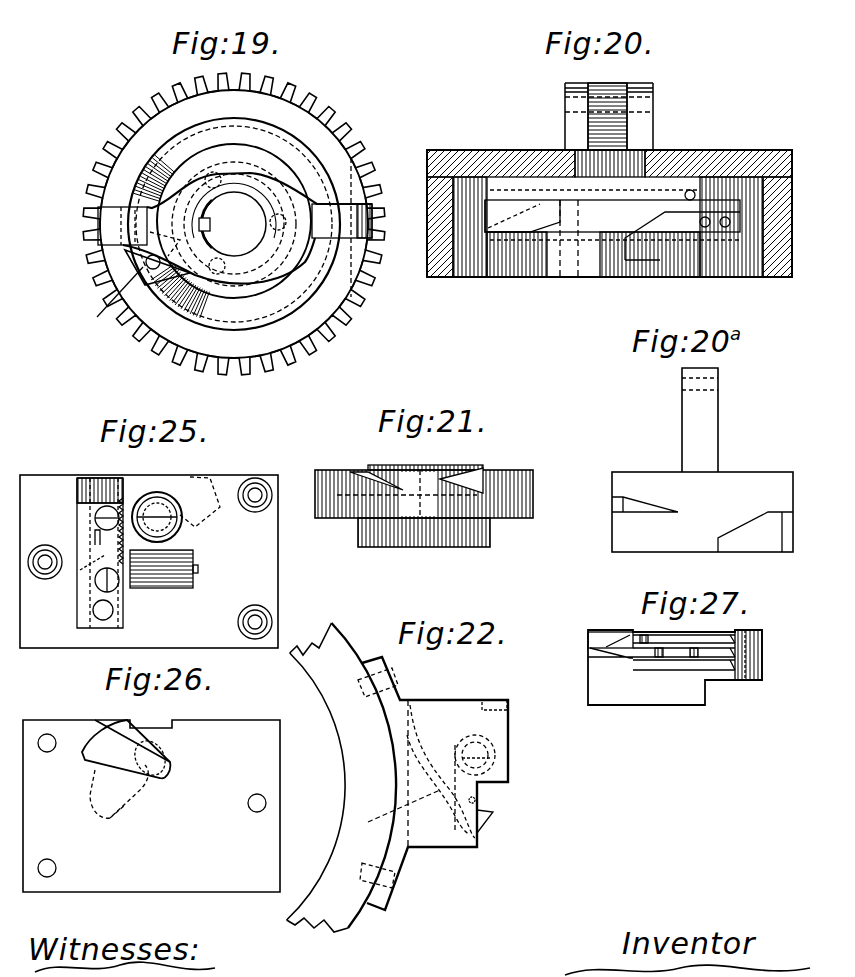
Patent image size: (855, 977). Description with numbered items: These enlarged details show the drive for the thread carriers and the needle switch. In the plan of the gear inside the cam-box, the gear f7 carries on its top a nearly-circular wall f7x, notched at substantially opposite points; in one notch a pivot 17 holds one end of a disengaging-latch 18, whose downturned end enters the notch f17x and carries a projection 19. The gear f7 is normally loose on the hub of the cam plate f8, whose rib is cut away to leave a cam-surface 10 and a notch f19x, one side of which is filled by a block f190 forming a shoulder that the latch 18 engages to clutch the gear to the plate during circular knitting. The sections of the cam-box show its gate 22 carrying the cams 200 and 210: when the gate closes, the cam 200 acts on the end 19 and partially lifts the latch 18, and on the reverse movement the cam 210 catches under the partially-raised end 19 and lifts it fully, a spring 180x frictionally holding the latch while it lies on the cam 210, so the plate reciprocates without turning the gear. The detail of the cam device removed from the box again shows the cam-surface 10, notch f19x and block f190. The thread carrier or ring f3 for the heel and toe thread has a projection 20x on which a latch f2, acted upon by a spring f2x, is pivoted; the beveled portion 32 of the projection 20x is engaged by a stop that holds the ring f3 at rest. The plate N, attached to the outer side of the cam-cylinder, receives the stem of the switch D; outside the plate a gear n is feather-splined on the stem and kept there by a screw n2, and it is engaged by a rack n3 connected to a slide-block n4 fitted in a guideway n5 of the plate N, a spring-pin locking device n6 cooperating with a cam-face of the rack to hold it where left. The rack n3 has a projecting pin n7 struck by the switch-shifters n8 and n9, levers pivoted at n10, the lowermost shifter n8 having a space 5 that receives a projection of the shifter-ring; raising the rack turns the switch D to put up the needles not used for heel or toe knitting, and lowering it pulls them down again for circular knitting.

In FIG. 19, the gear f7 is at (182, 360).
In FIG. 19, the nearly-circular wall f7x is at (162, 128).
In FIG. 19, the cam plate f8 is at (270, 140).
In FIG. 19, the pivot 17 is at (363, 182).
In FIG. 19, the disengaging-latch 18 is at (254, 186).
In FIG. 19, the projection 19 is at (95, 230).
In FIG. 19, the cam-surface 10 is at (165, 300).
In FIG. 21, the cam-surface 10 is at (355, 472).
In FIG. 19, the notch f17x is at (146, 264).
In FIG. 19, the block f190 is at (101, 309).
In FIG. 21, the block f190 is at (488, 455).
In FIG. 20, the spring 180x is at (565, 203).
In FIG. 20, the cam 210 is at (553, 232).
In FIG. 20A, the cam 210 is at (641, 514).
In FIG. 20, the gate 22 is at (600, 258).
In FIG. 20A, the gate 22 is at (702, 460).
In FIG. 20, the cam 200 is at (666, 262).
In FIG. 20A, the cam 200 is at (755, 532).
In FIG. 21, the thread carrier or ring f3 is at (533, 503).
In FIG. 22, the thread carrier or ring f3 is at (345, 787).
In FIG. 21, the notch f19x is at (430, 487).
In FIG. 25, the plate N is at (162, 561).
In FIG. 26, the plate N is at (151, 806).
In FIG. 25, the gear n is at (125, 495).
In FIG. 25, the guideway n5 is at (92, 480).
In FIG. 25, the slide-block n4 is at (95, 540).
In FIG. 25, the screw n2 is at (160, 492).
In FIG. 25, the switch D is at (215, 492).
In FIG. 26, the switch D is at (97, 730).
In FIG. 25, the locking device n6 is at (178, 545).
In FIG. 25, the rack n3 is at (112, 547).
In FIG. 25, the projecting pin n7 is at (100, 610).
In FIG. 22, the beveled portion 32 is at (492, 700).
In FIG. 22, the projection 20x is at (505, 718).
In FIG. 22, the spring f2x is at (399, 792).
In FIG. 22, the latch f2 is at (480, 825).
In FIG. 27, the pivot n10 is at (752, 632).
In FIG. 27, the space 5 is at (690, 652).
In FIG. 27, the switch-shifter n9 is at (604, 636).
In FIG. 27, the switch-shifter n8 is at (612, 658).